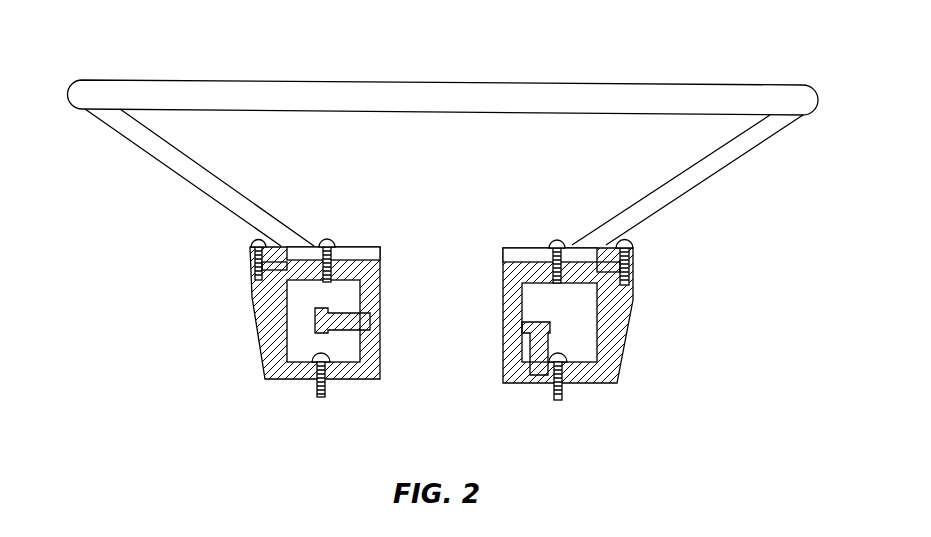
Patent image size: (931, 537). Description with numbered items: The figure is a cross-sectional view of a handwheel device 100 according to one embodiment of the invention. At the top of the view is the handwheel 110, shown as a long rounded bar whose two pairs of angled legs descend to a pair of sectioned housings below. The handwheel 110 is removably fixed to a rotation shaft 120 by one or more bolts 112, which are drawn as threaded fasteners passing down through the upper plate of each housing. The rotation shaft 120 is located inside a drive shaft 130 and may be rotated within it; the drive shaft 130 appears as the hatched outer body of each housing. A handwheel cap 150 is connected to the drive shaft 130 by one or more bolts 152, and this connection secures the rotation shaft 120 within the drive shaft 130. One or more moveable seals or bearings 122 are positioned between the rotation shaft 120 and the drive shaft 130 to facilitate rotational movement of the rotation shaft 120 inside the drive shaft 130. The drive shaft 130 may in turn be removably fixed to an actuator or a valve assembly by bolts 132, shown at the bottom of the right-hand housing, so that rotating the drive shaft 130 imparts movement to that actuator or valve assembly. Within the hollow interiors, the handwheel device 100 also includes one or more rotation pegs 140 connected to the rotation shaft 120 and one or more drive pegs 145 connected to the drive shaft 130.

The handwheel device 100 is at (146, 338).
The handwheel 110 is at (170, 93).
The bolts 112 is at (321, 243).
The rotation shaft 120 is at (610, 266).
The moveable seals or bearings 122 is at (358, 372).
The drive shaft 130 is at (616, 317).
The bolts 132 is at (564, 356).
The rotation pegs 140 is at (372, 327).
The drive pegs 145 is at (520, 373).
The handwheel cap 150 is at (287, 273).
The bolts 152 is at (252, 241).